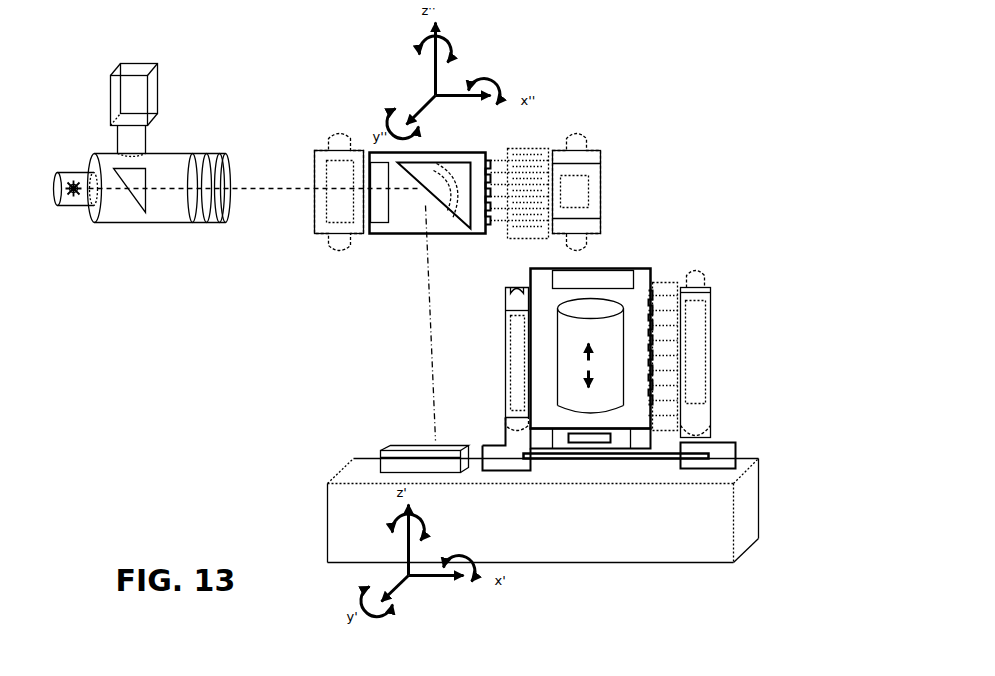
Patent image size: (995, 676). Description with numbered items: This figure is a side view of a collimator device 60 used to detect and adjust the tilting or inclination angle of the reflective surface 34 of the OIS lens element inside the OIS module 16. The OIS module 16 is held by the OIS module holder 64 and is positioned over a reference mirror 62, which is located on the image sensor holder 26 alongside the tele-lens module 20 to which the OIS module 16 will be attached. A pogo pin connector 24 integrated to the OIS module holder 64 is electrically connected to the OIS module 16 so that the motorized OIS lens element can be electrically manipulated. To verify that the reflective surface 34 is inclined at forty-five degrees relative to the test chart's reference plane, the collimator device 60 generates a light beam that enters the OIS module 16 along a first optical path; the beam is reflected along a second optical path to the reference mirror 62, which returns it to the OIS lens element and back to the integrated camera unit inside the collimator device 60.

The OIS module 16 is at (448, 238).
The tele-lens module 20 is at (642, 274).
The pogo pin connector 24 is at (544, 143).
The image sensor holder 26 is at (356, 505).
The reflective surface 34 is at (438, 200).
The collimator device 60 is at (167, 163).
The reference mirror 62 is at (386, 445).
The OIS module holder 64 is at (594, 182).